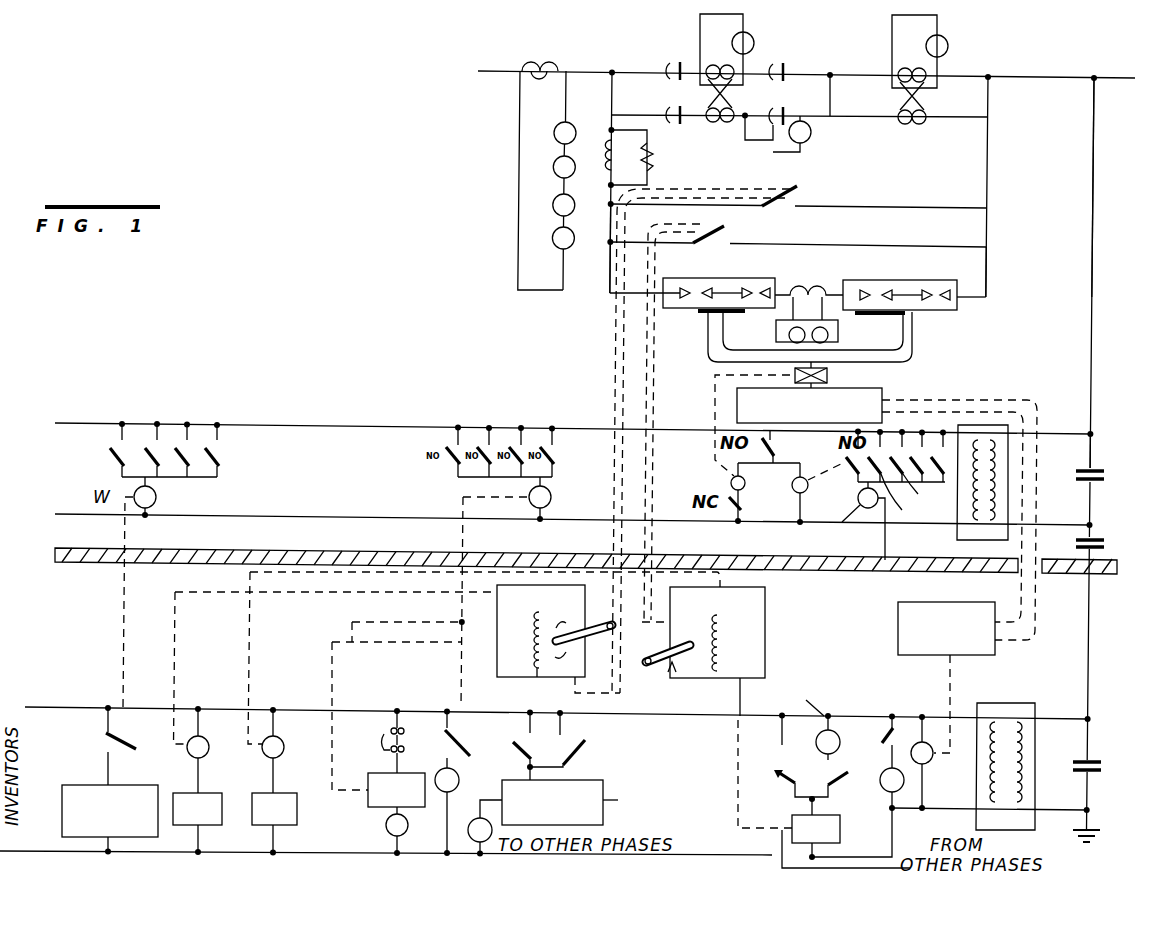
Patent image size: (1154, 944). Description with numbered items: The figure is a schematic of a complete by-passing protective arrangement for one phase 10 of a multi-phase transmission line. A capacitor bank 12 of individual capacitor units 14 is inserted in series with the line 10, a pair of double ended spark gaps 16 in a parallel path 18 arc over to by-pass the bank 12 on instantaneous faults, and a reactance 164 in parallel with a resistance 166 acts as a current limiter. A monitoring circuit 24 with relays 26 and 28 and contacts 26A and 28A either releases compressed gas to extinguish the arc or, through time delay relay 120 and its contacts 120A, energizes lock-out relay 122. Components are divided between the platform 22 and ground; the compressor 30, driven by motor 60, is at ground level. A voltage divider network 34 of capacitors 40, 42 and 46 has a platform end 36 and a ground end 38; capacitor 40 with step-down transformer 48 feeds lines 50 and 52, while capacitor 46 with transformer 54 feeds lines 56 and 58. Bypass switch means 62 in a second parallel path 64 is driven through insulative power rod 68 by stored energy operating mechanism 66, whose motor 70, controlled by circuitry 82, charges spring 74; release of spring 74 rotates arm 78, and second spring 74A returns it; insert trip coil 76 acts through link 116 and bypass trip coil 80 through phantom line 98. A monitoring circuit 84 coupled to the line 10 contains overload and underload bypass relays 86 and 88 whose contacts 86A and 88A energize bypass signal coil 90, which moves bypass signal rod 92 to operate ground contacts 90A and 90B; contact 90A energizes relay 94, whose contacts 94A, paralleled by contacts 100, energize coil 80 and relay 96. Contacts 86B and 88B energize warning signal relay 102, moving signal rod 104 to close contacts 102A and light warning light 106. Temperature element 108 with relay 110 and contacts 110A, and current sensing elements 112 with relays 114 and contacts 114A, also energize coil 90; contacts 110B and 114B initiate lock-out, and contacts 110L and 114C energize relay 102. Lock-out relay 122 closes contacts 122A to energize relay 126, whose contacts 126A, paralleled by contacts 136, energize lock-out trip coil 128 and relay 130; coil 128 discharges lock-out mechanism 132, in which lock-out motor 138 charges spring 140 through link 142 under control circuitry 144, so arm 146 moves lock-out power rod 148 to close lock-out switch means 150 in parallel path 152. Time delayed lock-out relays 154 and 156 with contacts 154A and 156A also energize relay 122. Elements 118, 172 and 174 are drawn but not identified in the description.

The phase of transmission line 10 is at (1058, 76).
The capacitor bank 12 is at (795, 56).
The capacitor units 14 is at (677, 62).
The double ended spark gaps 16 is at (750, 278).
The parallel path 18 is at (990, 284).
The platform 22 is at (396, 551).
The monitoring circuit 24 is at (776, 322).
The relay 26 is at (790, 340).
The relay 28 is at (832, 342).
The compressor 30 is at (962, 593).
The voltage divider network 34 is at (1102, 300).
The platform-potential end of voltage divider 36 is at (1110, 472).
The ground end of voltage divider 38 is at (1107, 777).
The capacitor 40 is at (1096, 481).
The capacitor 42 is at (1100, 543).
The capacitor 46 is at (1098, 764).
The step-down transformer 48 is at (957, 536).
The line 50 is at (692, 418).
The line 52 is at (668, 522).
The step-down transformer 54 is at (1018, 697).
The line 56 is at (722, 716).
The line 58 is at (820, 794).
The motor 60 is at (933, 762).
The bypass switch means 62 is at (799, 193).
The second parallel path 64 is at (893, 208).
The bypass operating mechanism 66 is at (497, 656).
The insulative bypass power rod 68 is at (612, 356).
The motor 70 is at (210, 756).
The spring 74 is at (537, 620).
The second spring 74A is at (537, 668).
The insert trip coil 76 is at (368, 790).
The arm 78 is at (597, 645).
The bypass trip coil 80 is at (606, 822).
The control circuitry 82 is at (187, 793).
The monitoring circuit 84 is at (540, 66).
The overload bypass relay 86 is at (556, 130).
The normally open contacts 86A is at (447, 470).
The normally open contacts 86B is at (110, 453).
The underload bypass relay 88 is at (553, 205).
The normally open contacts 88A is at (482, 455).
The normally open contacts 88B is at (155, 440).
The bypass signal coil 90 is at (555, 497).
The normally open contacts 90A is at (404, 732).
The normally closed contacts 90B is at (404, 752).
The insulative bypass signal rod 92 is at (460, 689).
The relay 94 is at (461, 779).
The normally open contacts 94A is at (517, 747).
The relay 96 is at (480, 818).
The phantom line link 98 is at (618, 748).
The normally open contacts 100 is at (574, 748).
The warning signal relay 102 is at (157, 497).
The normally open contacts 102A is at (114, 740).
The insulation signal rod 104 is at (122, 604).
The warning light 106 is at (62, 803).
The temperature responsive monitoring element 108 is at (750, 145).
The relay 110 is at (812, 139).
The normally open contacts 110A is at (507, 445).
The contacts 110B is at (898, 456).
The contacts 110L is at (185, 440).
The current sensing elements 112 is at (712, 93).
The relays 114 is at (753, 40).
The normally open contacts 114A is at (550, 458).
The contacts 114B is at (938, 456).
The contacts 114C is at (214, 462).
The link 116 is at (330, 672).
The relay 118 is at (408, 828).
The time delay relay 120 is at (803, 498).
The normally open contacts 120A is at (806, 481).
The lock-out relay 122 is at (850, 512).
The normally open contacts 122A is at (886, 748).
The relay 126 is at (884, 800).
The normally open contacts 126A is at (834, 785).
The lock-out trip coil 128 is at (840, 836).
The relay 130 is at (840, 745).
The lock-out operating mechanism 132 is at (770, 668).
The normally open contacts 136 is at (778, 778).
The lock-out motor 138 is at (285, 758).
The spring 140 is at (740, 632).
The link 142 is at (249, 634).
The control circuitry 144 is at (297, 810).
The arm 146 is at (648, 668).
The lock-out power rod 148 is at (652, 376).
The lock-out switch means 150 is at (726, 230).
The parallel path 152 is at (864, 242).
The time delayed overload lock-out relay 154 is at (555, 170).
The contacts 154A is at (913, 498).
The time delayed underload lock-out relay 156 is at (556, 249).
The contacts 156A is at (931, 488).
The reactance 164 is at (657, 172).
The resistance 166 is at (655, 150).
The conductor 172 is at (991, 236).
The conductor 174 is at (608, 228).
The contacts 26A is at (744, 508).
The normally open contact 28A is at (774, 450).